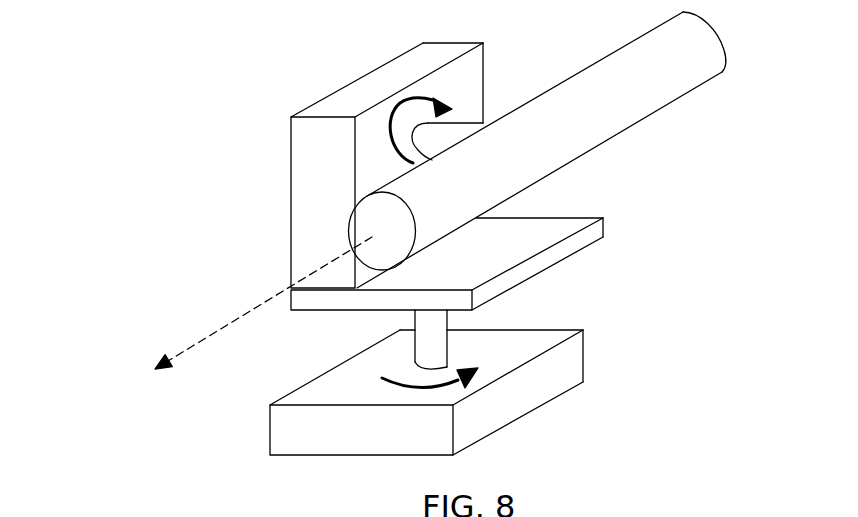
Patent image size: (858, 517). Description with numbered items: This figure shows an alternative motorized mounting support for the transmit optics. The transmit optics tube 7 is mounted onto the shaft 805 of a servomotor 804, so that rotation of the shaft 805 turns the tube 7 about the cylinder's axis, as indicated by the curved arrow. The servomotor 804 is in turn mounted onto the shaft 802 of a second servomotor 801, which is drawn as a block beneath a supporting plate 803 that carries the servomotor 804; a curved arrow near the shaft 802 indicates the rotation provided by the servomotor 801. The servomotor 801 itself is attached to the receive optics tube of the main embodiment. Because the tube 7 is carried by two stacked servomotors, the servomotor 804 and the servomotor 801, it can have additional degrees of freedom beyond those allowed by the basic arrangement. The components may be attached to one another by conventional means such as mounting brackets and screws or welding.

The transmit optics tube 7 is at (700, 50).
The servomotor 801 is at (540, 342).
The shaft 802 is at (428, 328).
The support plate 803 is at (553, 228).
The servomotor 804 is at (317, 163).
The shaft 805 is at (463, 128).